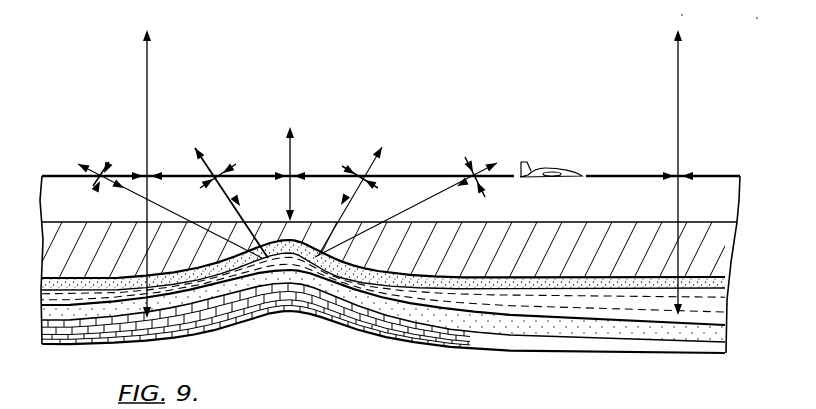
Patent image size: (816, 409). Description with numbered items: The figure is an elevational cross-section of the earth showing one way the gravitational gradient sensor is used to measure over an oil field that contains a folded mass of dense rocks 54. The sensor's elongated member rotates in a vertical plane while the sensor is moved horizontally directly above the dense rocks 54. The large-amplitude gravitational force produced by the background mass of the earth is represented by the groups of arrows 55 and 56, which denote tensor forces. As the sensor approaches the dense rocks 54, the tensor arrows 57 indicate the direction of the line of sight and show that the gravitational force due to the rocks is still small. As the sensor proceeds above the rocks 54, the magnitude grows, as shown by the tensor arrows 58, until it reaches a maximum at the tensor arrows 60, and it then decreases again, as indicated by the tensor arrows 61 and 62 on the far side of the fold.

The folded mass of dense rocks 54 is at (313, 258).
The group of arrows denoting tensor forces 55 is at (148, 91).
The group of arrows denoting tensor forces 56 is at (677, 129).
The tensor arrows 57 is at (87, 170).
The tensor arrows 58 is at (205, 159).
The tensor arrows at maximum 60 is at (291, 155).
The tensor arrows 61 is at (372, 164).
The tensor arrows 62 is at (478, 170).